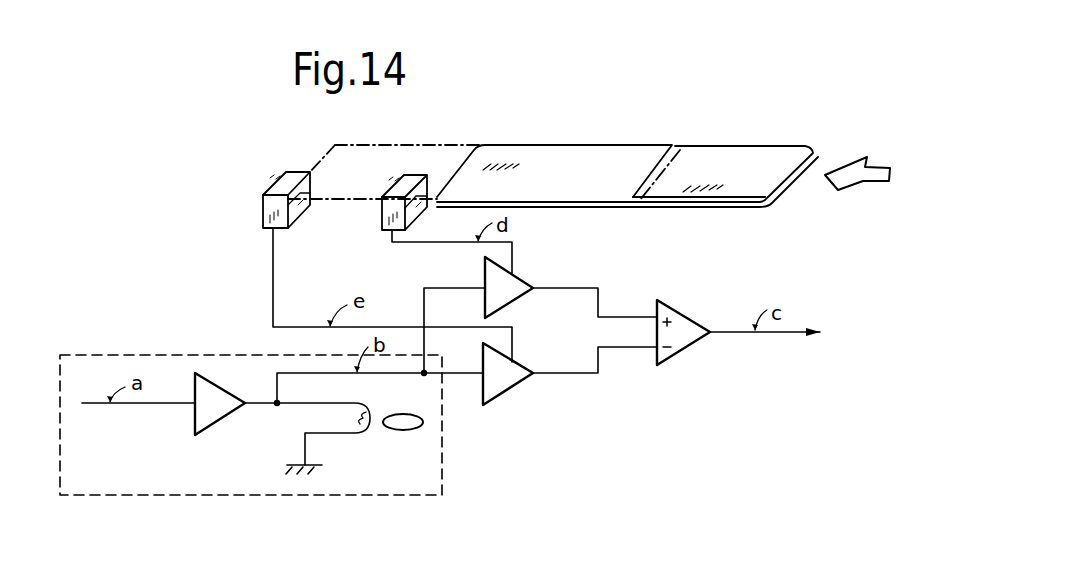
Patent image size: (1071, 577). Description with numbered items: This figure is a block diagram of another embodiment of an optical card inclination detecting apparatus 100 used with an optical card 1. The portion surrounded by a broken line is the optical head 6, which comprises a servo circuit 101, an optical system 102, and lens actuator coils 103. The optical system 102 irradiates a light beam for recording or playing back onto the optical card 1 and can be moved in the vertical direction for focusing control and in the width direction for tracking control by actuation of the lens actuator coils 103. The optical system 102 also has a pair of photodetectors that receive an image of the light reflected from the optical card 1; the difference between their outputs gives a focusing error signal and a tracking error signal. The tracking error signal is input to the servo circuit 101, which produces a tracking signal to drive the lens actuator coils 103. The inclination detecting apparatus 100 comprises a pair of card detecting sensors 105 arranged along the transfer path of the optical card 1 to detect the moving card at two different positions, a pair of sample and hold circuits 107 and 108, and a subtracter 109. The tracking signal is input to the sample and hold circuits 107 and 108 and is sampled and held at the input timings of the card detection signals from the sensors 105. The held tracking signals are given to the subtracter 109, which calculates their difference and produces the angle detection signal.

The optical card 1 is at (745, 145).
The optical head 6 is at (72, 354).
The optical card inclination detecting apparatus 100 is at (682, 253).
The servo circuit 101 is at (193, 418).
The optical system 102 is at (400, 430).
The lens actuator coils 103 is at (363, 416).
The card detecting sensor 105 is at (263, 215).
The sample and hold circuit 107 is at (522, 273).
The sample and hold circuit 108 is at (518, 358).
The subtracter 109 is at (690, 317).